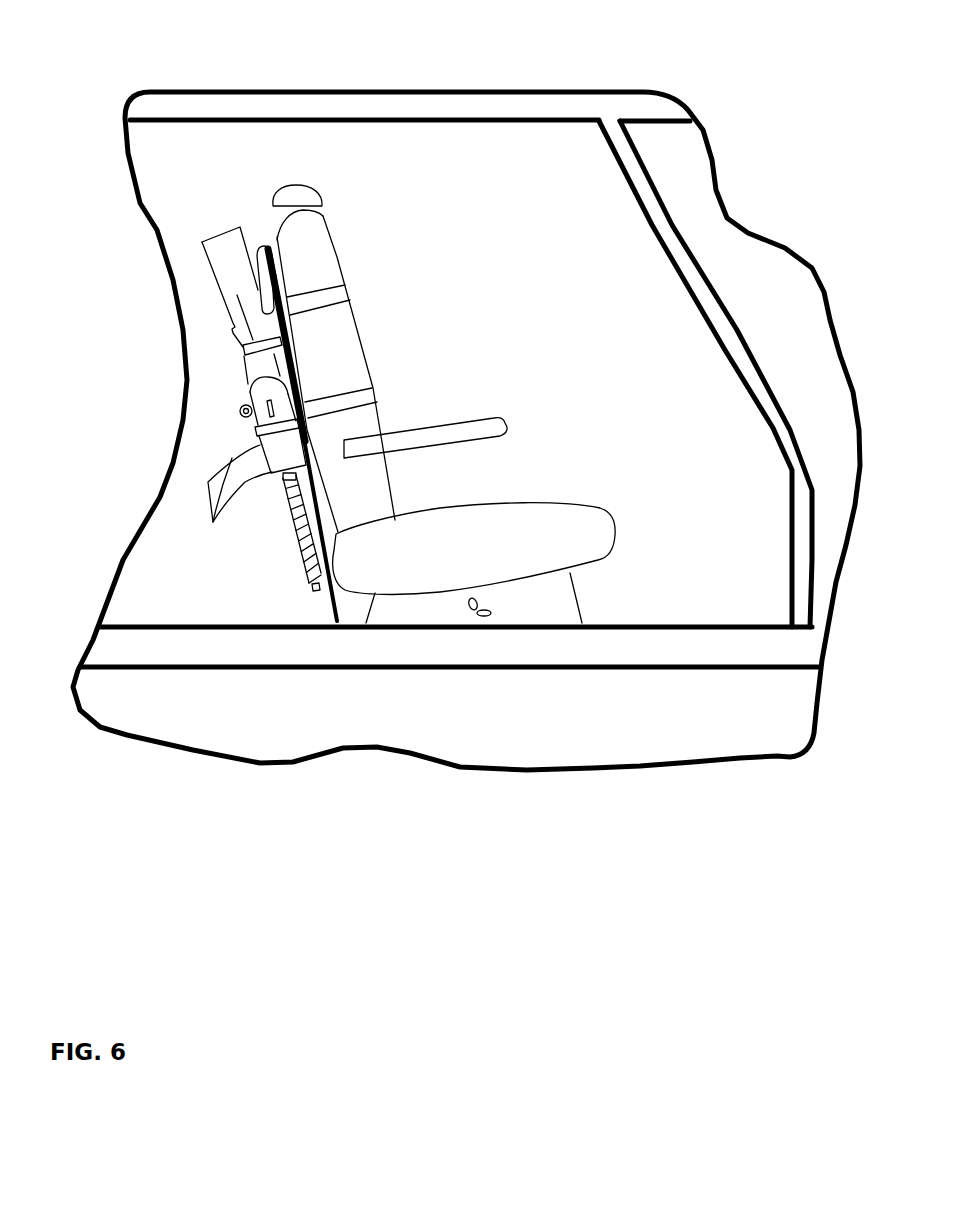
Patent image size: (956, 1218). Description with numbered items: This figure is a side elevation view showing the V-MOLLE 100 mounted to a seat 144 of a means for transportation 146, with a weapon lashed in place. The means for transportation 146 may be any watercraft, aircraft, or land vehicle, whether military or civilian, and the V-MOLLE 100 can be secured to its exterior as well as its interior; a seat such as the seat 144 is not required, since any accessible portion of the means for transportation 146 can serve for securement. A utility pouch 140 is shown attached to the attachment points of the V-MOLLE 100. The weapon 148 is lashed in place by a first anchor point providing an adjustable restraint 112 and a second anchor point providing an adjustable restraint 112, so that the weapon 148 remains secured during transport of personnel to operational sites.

The V-MOLLE 100 is at (236, 319).
The adjustable restraint 112 is at (235, 325).
The utility pouch 140 is at (260, 236).
The seat 144 is at (493, 492).
The means for transportation 146 is at (669, 681).
The weapon 148 is at (236, 384).